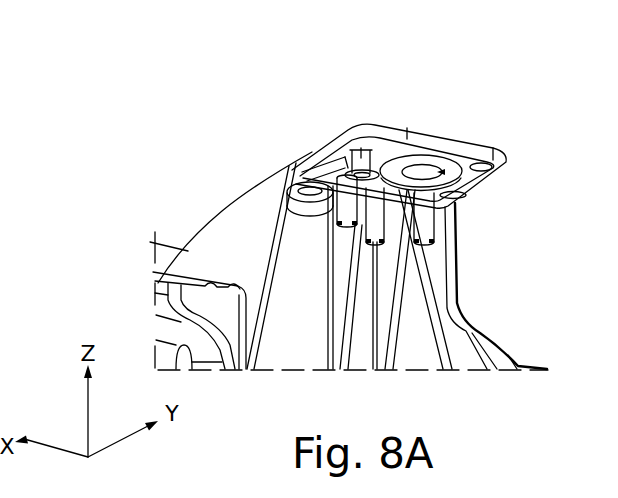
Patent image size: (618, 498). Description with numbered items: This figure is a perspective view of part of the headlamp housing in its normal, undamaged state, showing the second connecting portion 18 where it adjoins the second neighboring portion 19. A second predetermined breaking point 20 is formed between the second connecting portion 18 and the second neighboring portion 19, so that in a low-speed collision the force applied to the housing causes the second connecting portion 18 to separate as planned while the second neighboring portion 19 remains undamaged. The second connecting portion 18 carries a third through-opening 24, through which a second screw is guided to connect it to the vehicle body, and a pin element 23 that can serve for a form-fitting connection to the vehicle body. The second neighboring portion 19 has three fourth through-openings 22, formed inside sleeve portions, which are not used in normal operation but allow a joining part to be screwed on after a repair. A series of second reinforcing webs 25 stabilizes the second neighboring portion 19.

The second connecting portion 18 is at (418, 108).
The second neighboring portion 19 is at (240, 199).
The second predetermined breaking point 20 is at (309, 156).
The fourth through-openings 22 is at (341, 236).
The pin element 23 is at (354, 136).
The third through-opening 24 is at (490, 183).
The second reinforcing webs 25 is at (340, 292).